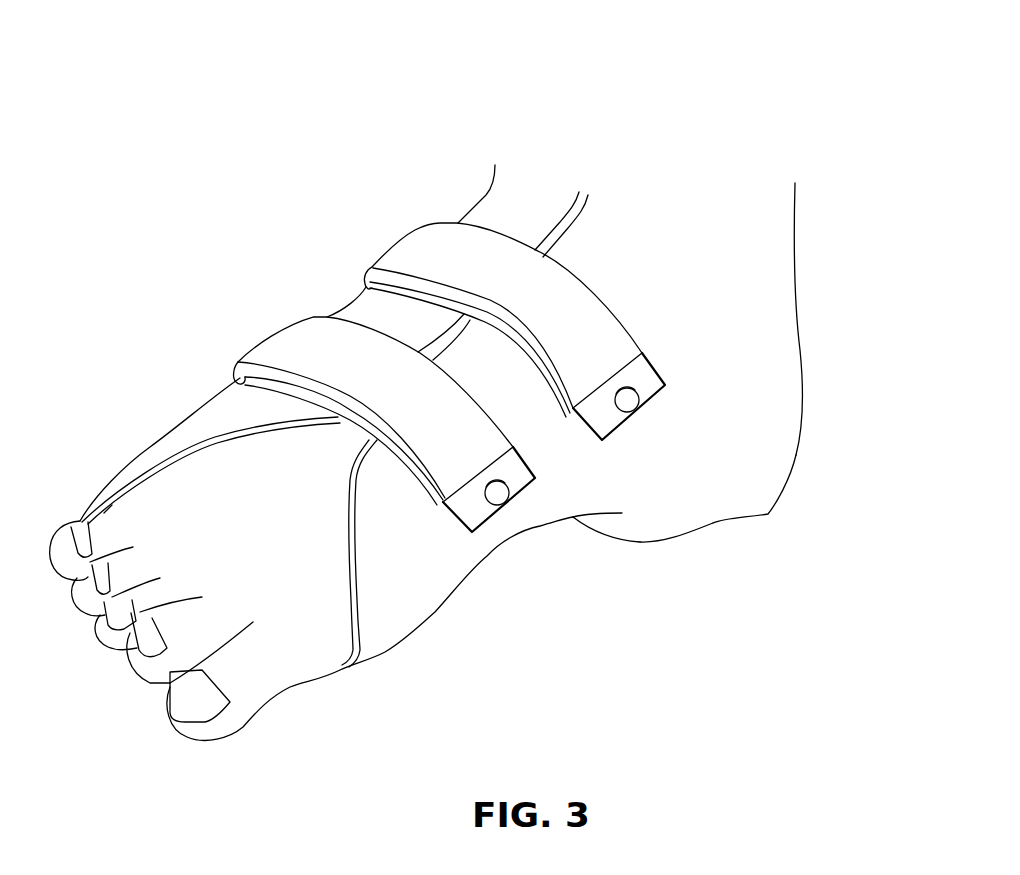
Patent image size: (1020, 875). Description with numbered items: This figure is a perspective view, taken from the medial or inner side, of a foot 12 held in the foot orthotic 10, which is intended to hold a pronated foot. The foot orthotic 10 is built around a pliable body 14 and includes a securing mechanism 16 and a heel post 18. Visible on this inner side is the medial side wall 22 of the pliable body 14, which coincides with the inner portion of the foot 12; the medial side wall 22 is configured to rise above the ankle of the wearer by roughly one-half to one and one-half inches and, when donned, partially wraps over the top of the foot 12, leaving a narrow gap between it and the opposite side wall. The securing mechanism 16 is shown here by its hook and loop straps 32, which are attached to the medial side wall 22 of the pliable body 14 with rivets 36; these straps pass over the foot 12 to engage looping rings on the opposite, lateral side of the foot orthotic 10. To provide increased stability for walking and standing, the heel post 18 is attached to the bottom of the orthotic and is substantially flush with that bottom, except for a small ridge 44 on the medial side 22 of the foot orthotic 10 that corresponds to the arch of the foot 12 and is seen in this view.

The foot orthotic 10 is at (413, 337).
The foot 12 is at (237, 455).
The pliable body 14 is at (832, 273).
The securing mechanism 16 is at (413, 407).
The heel post 18 is at (707, 513).
The medial side wall 22 is at (562, 492).
The hook and loop straps 32 is at (417, 253).
The rivets 36 is at (627, 400).
The ridge 44 is at (648, 530).